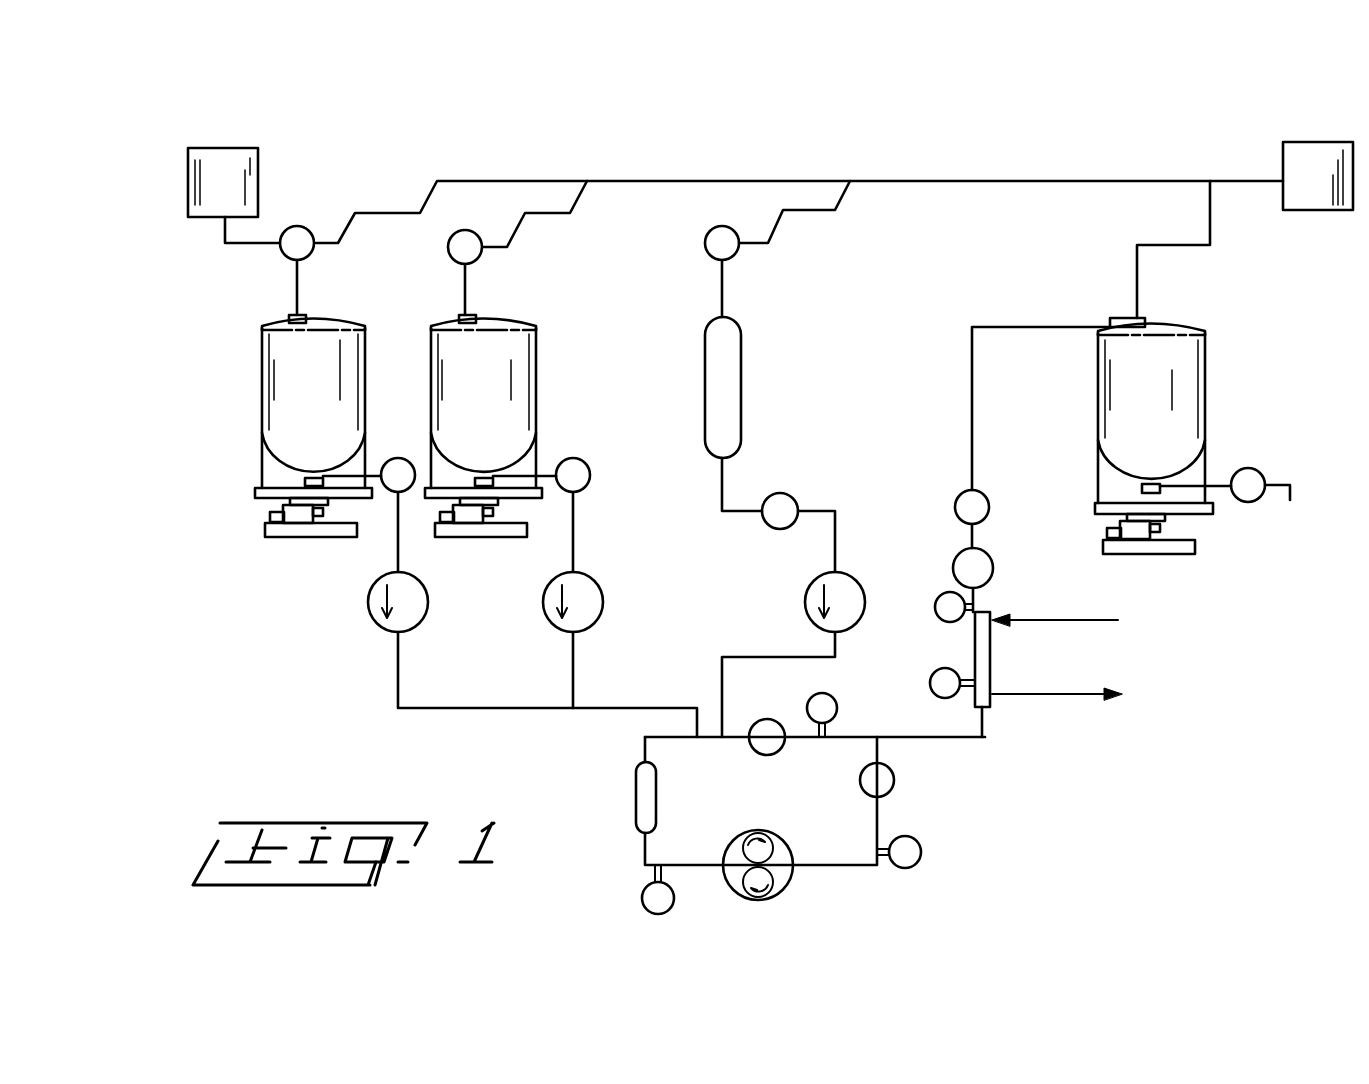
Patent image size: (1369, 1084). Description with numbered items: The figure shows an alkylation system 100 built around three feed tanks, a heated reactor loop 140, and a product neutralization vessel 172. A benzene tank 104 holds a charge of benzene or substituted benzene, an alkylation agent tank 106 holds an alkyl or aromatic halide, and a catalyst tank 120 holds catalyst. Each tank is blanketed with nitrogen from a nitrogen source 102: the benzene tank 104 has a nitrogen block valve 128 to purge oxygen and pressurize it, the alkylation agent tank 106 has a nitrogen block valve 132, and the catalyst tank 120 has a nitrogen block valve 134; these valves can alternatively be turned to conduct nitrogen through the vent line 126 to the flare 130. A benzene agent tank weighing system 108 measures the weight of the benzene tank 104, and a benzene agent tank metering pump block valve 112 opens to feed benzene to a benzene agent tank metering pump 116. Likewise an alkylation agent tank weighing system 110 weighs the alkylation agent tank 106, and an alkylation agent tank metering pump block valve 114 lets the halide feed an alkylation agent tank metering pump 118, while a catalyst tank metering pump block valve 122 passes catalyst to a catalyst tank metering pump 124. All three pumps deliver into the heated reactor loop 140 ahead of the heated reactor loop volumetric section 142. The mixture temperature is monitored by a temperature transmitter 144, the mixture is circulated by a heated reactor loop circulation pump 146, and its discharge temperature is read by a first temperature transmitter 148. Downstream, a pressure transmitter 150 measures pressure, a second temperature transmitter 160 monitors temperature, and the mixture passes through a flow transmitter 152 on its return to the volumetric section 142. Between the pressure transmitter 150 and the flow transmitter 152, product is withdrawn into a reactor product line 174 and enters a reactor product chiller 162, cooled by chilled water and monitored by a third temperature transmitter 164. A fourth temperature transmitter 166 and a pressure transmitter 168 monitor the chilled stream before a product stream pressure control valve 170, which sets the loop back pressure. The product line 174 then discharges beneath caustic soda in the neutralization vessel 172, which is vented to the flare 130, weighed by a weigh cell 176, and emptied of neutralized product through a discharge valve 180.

The alkylation system 100 is at (1124, 146).
The nitrogen source 102 is at (200, 218).
The benzene tank 104 is at (262, 405).
The alkylation agent tank 106 is at (537, 372).
The benzene agent tank weighing system 108 is at (275, 530).
The alkylation agent tank weighing system 110 is at (493, 537).
The benzene agent tank metering pump block valve 112 is at (390, 491).
The alkylation agent tank metering pump block valve 114 is at (586, 462).
The benzene agent tank metering pump 116 is at (378, 622).
The alkylation agent tank metering pump 118 is at (592, 626).
The catalyst tank 120 is at (742, 328).
The catalyst tank metering pump block valve 122 is at (783, 494).
The catalyst tank metering pump 124 is at (805, 600).
The vent manifold line 126 is at (388, 212).
The nitrogen block valve 128 is at (280, 257).
The flare 130 is at (1327, 199).
The nitrogen block valve 132 is at (450, 250).
The nitrogen block valve 134 is at (705, 243).
The heated reactor loop 140 is at (920, 822).
The heated reactor loop volumetric section 142 is at (637, 790).
The temperature transmitter 144 is at (657, 900).
The heated reactor loop circulation pump 146 is at (785, 890).
The first temperature transmitter 148 is at (914, 867).
The pressure transmitter 150 is at (895, 778).
The flow transmitter 152 is at (773, 756).
The second temperature transmitter 160 is at (836, 704).
The reactor product chiller 162 is at (992, 660).
The third temperature transmitter 164 is at (942, 675).
The fourth temperature transmitter 166 is at (952, 600).
The pressure transmitter 168 is at (958, 556).
The product stream pressure control valve 170 is at (975, 488).
The product neutralization vessel 172 is at (1206, 372).
The reactor product line 174 is at (970, 360).
The weigh cell 176 is at (1195, 547).
The discharge valve 180 is at (1262, 470).